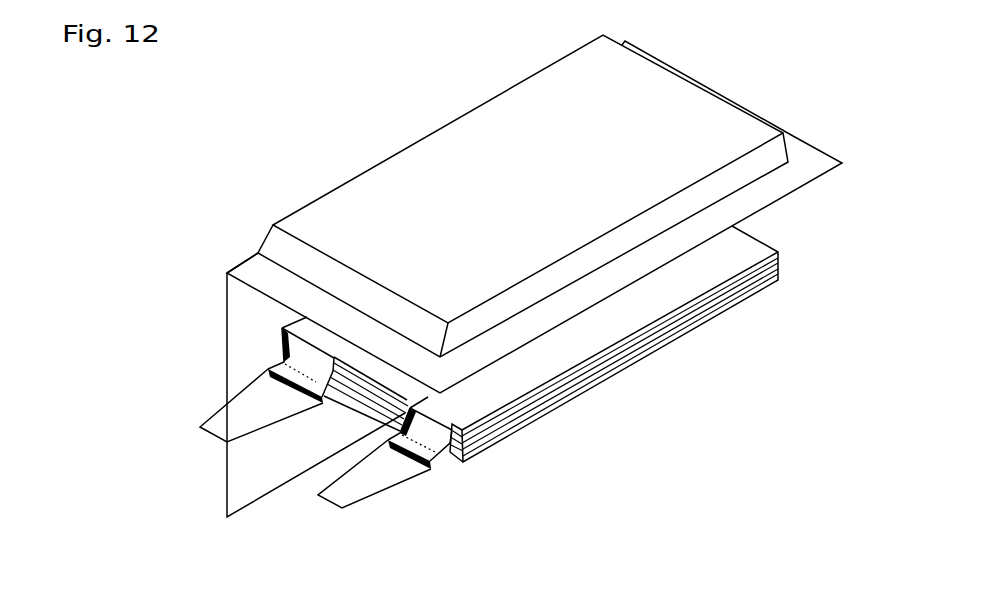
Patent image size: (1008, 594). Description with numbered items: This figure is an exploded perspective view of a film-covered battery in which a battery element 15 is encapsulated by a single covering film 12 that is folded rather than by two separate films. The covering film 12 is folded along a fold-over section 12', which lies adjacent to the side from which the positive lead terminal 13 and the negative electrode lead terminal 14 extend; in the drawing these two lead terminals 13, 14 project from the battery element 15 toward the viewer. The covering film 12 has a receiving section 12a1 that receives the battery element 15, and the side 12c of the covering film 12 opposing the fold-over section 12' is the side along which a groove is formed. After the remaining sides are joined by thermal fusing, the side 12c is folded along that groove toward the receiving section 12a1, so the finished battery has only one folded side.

The covering film 12 is at (534, 214).
The receiving section 12a1 is at (678, 102).
The side 12c is at (250, 251).
The fold-over section 12' is at (253, 376).
The battery element 15 is at (743, 250).
The negative electrode lead terminal 14 is at (217, 428).
The positive lead terminal 13 is at (340, 496).